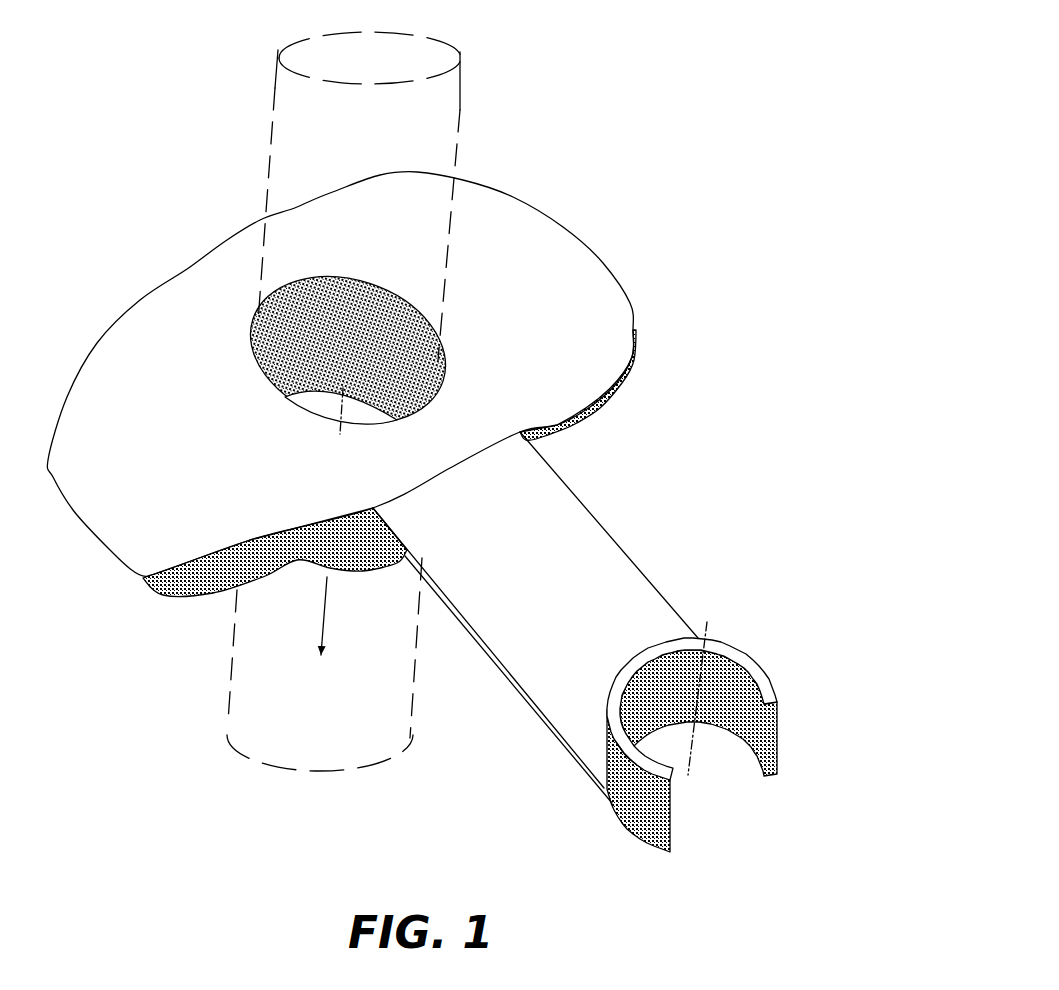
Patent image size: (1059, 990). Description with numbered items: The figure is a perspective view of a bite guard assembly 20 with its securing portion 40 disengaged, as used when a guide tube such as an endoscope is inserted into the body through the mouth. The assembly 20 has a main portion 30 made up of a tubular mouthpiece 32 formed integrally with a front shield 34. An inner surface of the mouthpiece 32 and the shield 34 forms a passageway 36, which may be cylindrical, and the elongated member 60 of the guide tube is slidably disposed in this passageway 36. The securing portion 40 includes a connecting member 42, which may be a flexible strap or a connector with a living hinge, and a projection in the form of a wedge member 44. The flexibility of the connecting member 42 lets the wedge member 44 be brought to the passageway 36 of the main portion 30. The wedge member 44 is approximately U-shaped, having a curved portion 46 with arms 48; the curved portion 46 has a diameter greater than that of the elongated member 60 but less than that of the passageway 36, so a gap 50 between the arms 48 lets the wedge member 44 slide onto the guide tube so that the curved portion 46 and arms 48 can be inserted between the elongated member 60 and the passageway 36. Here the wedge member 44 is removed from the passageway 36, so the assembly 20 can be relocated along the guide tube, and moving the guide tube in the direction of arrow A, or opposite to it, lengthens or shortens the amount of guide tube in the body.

The bite guard assembly 20 is at (681, 63).
The main portion 30 is at (364, 375).
The tubular mouthpiece 32 is at (351, 570).
The front shield 34 is at (633, 306).
The passageway 36 is at (255, 331).
The securing portion 40 is at (587, 647).
The connecting member 42 is at (607, 527).
The wedge member 44 is at (698, 719).
The curved portion 46 is at (616, 688).
The arms 48 is at (750, 657).
The gap 50 is at (715, 801).
The elongated member 60 is at (277, 72).
The arrow A is at (324, 612).